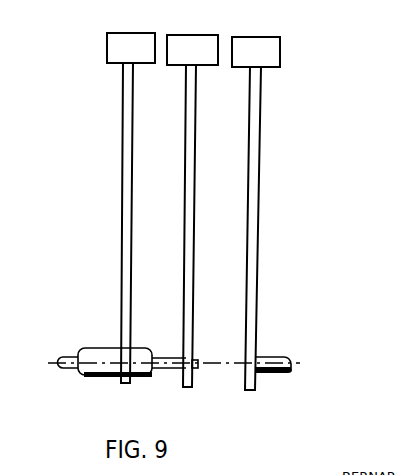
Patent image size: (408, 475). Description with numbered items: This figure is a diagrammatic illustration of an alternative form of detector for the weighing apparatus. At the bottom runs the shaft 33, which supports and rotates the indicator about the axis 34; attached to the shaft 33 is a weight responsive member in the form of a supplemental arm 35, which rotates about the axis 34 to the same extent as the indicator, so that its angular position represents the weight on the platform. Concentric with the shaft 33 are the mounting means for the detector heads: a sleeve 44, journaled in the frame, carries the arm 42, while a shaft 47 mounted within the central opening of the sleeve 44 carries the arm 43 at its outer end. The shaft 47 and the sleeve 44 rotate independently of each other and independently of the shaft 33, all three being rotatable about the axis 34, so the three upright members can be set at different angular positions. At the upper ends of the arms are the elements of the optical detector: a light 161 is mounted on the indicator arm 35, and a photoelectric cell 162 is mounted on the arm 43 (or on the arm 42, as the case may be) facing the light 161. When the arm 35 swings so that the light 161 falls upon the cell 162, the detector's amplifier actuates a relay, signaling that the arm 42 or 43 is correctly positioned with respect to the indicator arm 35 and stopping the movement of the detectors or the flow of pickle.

The photoelectric cell 162 is at (208, 35).
The light 161 is at (278, 37).
The arm 42 is at (121, 135).
The arm 43 is at (185, 101).
The supplemental arm 35 is at (259, 143).
The sleeve 44 is at (135, 378).
The shaft 47 is at (199, 364).
The shaft 33 is at (266, 357).
The axis 34 is at (290, 368).